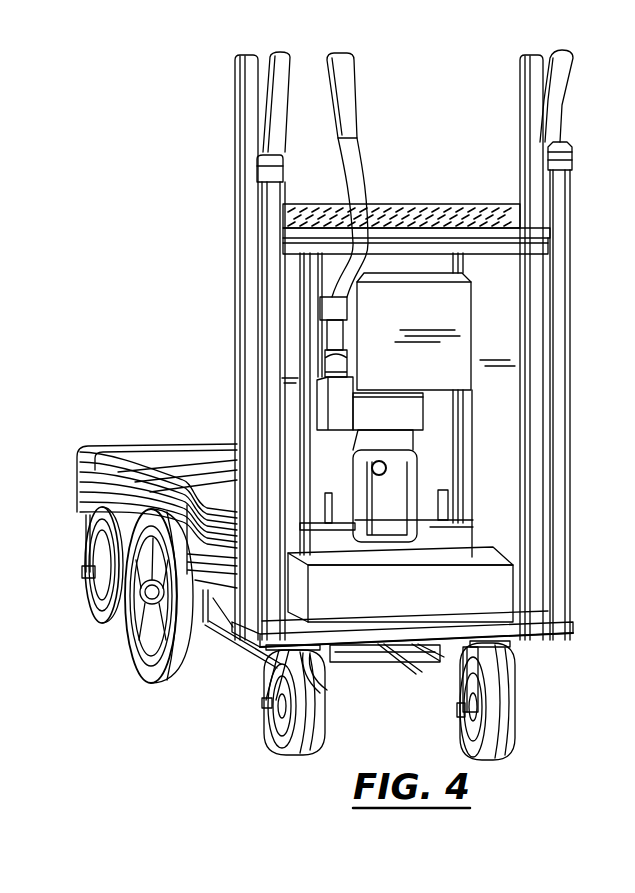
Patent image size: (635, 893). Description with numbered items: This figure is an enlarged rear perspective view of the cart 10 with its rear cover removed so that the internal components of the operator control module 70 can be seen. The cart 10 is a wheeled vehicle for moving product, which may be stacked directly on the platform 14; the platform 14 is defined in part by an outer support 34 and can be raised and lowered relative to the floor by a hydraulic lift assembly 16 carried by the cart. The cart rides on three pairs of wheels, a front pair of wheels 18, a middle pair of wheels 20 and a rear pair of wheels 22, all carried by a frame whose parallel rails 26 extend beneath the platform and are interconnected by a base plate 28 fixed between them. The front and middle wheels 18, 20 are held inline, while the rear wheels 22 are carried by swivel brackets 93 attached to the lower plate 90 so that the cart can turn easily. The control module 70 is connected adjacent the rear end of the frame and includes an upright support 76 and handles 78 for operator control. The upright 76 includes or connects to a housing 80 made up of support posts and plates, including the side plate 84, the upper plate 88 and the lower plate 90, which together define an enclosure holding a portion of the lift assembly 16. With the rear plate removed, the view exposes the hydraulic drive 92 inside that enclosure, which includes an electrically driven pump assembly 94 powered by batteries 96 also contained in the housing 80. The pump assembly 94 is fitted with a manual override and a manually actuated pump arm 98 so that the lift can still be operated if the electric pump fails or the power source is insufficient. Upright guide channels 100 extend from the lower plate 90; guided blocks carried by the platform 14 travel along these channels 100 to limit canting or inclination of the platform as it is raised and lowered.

The cart 10 is at (186, 271).
The platform 14 is at (80, 447).
The hydraulic lift assembly 16 is at (493, 487).
The front wheels 18 is at (118, 620).
The middle wheels 20 is at (140, 635).
The rear wheels 22 is at (317, 732).
The rails 26 is at (234, 647).
The base plate 28 is at (348, 663).
The outer support 34 is at (150, 441).
The operator control module 70 is at (567, 307).
The upright support 76 is at (253, 152).
The handle 78 is at (558, 84).
The housing 80 is at (568, 585).
The side plate 84 is at (533, 349).
The upper plate 88 is at (441, 203).
The lower plate 90 is at (573, 636).
The hydraulic drive 92 is at (470, 405).
The swivel bracket 93 is at (276, 668).
The pump assembly 94 is at (400, 475).
The batteries 96 is at (465, 557).
The pump arm 98 is at (345, 101).
The guide channels 100 is at (475, 438).